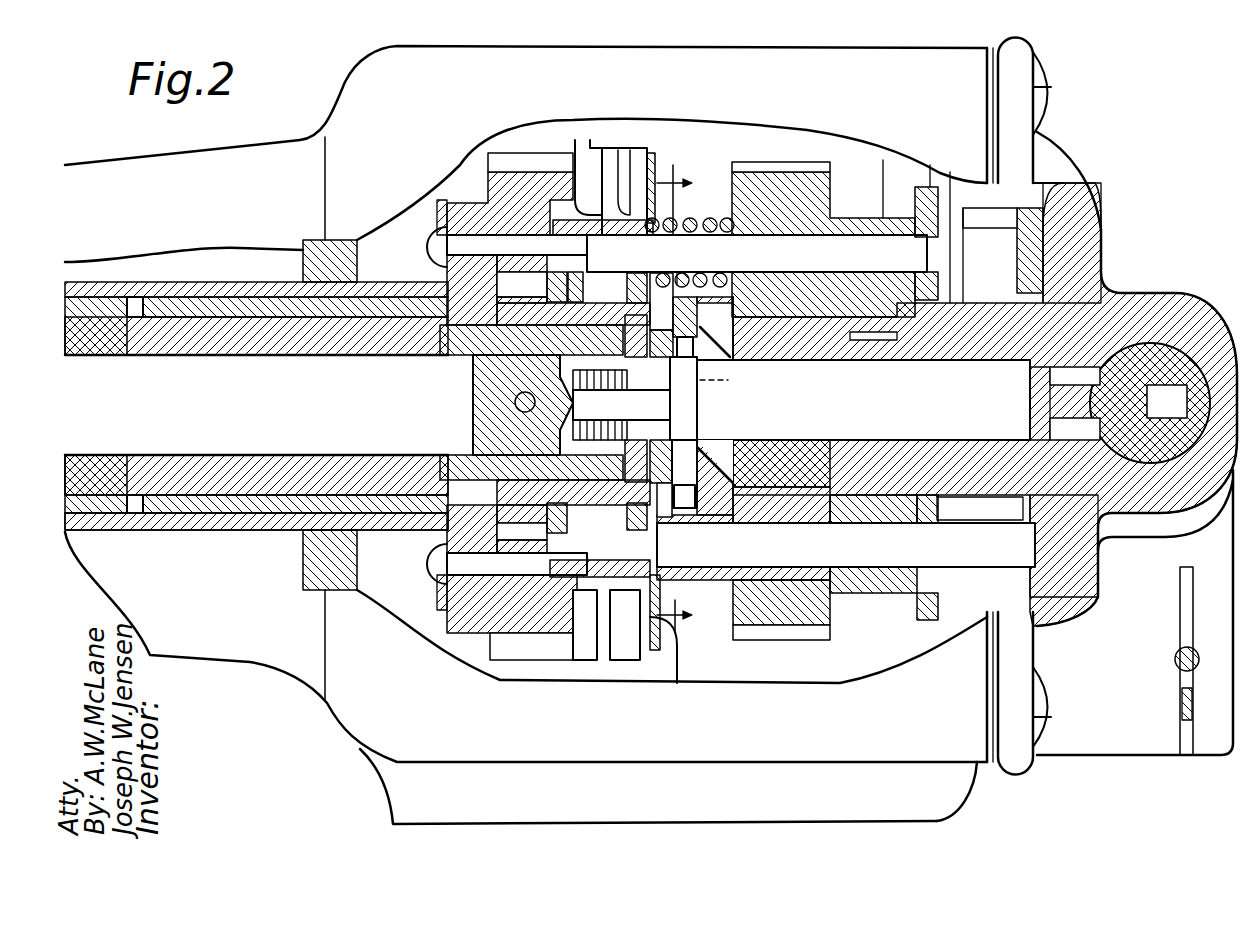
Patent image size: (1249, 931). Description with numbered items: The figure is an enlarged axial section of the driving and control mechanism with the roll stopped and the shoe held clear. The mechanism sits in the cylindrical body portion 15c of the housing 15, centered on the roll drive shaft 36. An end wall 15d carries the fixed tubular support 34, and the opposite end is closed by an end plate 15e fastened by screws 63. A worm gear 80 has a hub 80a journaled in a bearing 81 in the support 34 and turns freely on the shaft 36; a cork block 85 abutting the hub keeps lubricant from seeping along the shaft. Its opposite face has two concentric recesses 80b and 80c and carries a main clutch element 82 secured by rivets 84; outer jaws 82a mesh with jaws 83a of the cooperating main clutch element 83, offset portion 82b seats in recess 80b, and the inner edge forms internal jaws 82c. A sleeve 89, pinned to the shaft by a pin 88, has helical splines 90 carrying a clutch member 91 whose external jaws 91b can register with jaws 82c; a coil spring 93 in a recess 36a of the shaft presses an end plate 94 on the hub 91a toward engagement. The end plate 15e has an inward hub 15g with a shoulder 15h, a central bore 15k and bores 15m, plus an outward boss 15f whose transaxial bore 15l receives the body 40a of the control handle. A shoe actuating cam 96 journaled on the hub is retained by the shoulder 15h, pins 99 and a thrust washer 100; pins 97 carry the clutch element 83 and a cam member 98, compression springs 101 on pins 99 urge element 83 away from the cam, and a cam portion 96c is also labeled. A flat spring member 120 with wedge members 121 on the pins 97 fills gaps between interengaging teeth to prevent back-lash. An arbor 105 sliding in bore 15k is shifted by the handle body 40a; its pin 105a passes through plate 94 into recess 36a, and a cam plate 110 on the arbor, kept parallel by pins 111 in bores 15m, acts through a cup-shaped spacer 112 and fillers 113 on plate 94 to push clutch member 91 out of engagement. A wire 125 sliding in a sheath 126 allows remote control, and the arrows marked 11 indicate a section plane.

The section line 11- 11 is at (685, 399).
The housing 15 is at (413, 790).
The cylindrical body portion 15c is at (953, 733).
The end wall 15d is at (350, 268).
The end plate 15e is at (1083, 200).
The elongated boss 15f is at (1190, 490).
The hub 15g is at (988, 320).
The transverse shoulder 15h is at (937, 318).
The central bore 15k is at (1101, 277).
The transaxially extending bore 15l is at (1165, 505).
The bores 15m is at (880, 347).
The fixed tubular support 34 is at (250, 525).
The roll drive shaft 36 is at (230, 440).
The recess 36a is at (557, 397).
The body 40a is at (1177, 330).
The screws 63 is at (1045, 98).
The worm gear 80 is at (537, 622).
The hub 80a is at (180, 333).
The annular recess 80b is at (562, 205).
The annular recess 80c is at (540, 268).
The bearing 81 is at (250, 303).
The main clutch element 82 is at (590, 150).
The fingers or jaws 82a is at (613, 167).
The annular offset portion 82b is at (583, 150).
The internal splines or jaws 82c is at (540, 582).
The cooperating main clutch element 83 is at (652, 175).
The fingers or jaws 83a is at (653, 160).
The rivets 84 is at (468, 240).
The block of cork 85 is at (105, 352).
The pin 88 is at (514, 400).
The sleeve 89 is at (585, 437).
The helical splines 90 is at (537, 452).
The clutch member 91 is at (433, 345).
The hub 91a is at (610, 300).
The external splines or jaws 91b is at (445, 268).
The coil spring 93 is at (663, 418).
The end plate 94 is at (673, 380).
The shoe actuating cam 96 is at (815, 197).
The piston ring 96c is at (930, 193).
The pins 97 is at (852, 550).
The cam member 98 is at (1045, 250).
The pins 99 is at (722, 222).
The annular pressure plate 100 is at (582, 605).
The compression coil springs 101 is at (690, 222).
The arbor 105 is at (1093, 312).
The pin 105a is at (648, 405).
The cam plate 110 is at (735, 440).
The pins 111 is at (833, 343).
The cup-shaped spacer 112 is at (660, 630).
The fillers 113 is at (677, 273).
The flat spring member 120 is at (657, 215).
The wedge members 121 is at (657, 165).
The wire 125 is at (1175, 657).
The sheath or casing 126 is at (1176, 664).